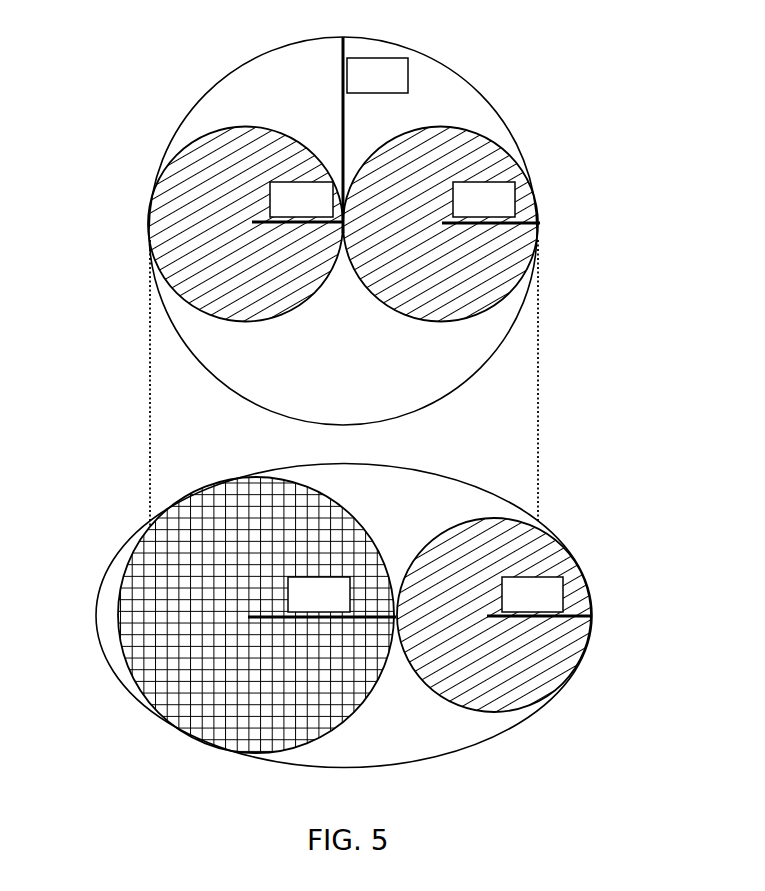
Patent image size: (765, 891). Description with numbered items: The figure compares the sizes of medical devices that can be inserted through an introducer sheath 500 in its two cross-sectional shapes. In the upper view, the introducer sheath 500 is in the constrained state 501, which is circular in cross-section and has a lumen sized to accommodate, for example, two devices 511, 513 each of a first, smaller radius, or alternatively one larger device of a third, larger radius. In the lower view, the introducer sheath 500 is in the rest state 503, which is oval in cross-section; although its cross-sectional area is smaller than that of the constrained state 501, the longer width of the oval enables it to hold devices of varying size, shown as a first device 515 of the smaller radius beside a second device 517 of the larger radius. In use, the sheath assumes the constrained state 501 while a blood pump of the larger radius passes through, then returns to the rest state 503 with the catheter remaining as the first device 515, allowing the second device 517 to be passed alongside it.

The introducer sheath 500 is at (147, 57).
The constrained state 501 is at (178, 130).
The device 511 is at (190, 237).
The device 513 is at (513, 238).
The rest state 503 is at (123, 545).
The second device 517 is at (148, 668).
The first device 515 is at (590, 607).